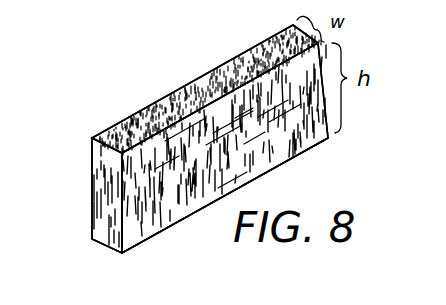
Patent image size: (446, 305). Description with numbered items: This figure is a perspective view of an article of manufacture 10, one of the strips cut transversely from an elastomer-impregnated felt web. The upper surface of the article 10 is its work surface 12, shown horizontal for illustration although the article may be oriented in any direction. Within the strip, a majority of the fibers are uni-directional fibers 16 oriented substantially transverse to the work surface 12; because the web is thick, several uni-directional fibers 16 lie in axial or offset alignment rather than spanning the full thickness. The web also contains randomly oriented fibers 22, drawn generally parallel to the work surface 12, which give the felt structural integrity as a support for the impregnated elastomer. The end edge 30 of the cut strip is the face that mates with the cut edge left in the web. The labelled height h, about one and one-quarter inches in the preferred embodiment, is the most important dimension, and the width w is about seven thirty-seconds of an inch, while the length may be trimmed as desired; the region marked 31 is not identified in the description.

The article of manufacture 10 is at (100, 249).
The work surface 12 is at (138, 110).
The uni-directional fibers 16 is at (222, 187).
The randomly oriented fibers 22 is at (165, 220).
The end edge 30 is at (93, 184).
The bottom edge 31 is at (287, 162).